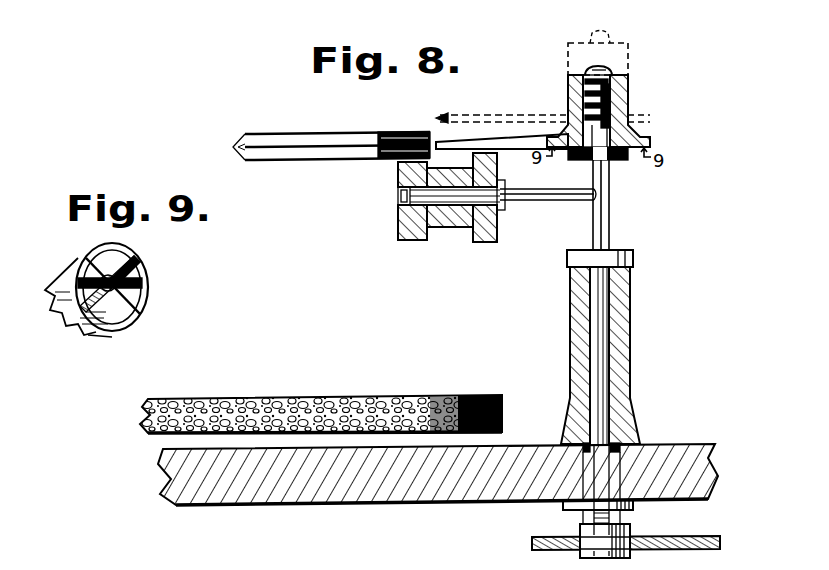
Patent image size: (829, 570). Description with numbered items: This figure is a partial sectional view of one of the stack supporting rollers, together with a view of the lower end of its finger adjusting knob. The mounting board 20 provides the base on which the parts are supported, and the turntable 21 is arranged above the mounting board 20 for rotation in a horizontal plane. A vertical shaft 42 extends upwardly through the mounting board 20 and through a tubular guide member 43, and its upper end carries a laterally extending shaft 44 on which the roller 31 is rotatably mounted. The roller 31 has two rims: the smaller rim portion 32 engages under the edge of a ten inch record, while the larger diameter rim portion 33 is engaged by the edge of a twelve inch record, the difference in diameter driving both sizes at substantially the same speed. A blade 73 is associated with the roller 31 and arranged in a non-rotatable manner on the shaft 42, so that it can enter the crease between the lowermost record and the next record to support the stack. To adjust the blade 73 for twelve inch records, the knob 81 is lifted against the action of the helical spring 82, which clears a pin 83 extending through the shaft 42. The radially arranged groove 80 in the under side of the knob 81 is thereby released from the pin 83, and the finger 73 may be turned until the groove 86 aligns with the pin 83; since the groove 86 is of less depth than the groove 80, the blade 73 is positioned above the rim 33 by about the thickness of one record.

In FIG. 8, the mounting board 20 is at (233, 500).
In FIG. 8, the turntable 21 is at (422, 402).
In FIG. 8, the roller 31 is at (448, 228).
In FIG. 8, the smaller rim portion 32 is at (410, 240).
In FIG. 8, the larger diameter rim portion 33 is at (481, 243).
In FIG. 8, the shaft 42 is at (605, 424).
In FIG. 9, the shaft 42 is at (130, 302).
In FIG. 8, the guide member 43 is at (625, 358).
In FIG. 8, the laterally extending shaft 44 is at (550, 195).
In FIG. 8, the blade 73 is at (450, 141).
In FIG. 9, the radially arranged groove 80 is at (86, 270).
In FIG. 8, the knob 81 is at (628, 104).
In FIG. 8, the helical spring 82 is at (628, 76).
In FIG. 8, the pin 83 is at (616, 160).
In FIG. 9, the pin 83 is at (136, 278).
In FIG. 8, the groove 86 is at (626, 543).
In FIG. 9, the groove 86 is at (95, 305).